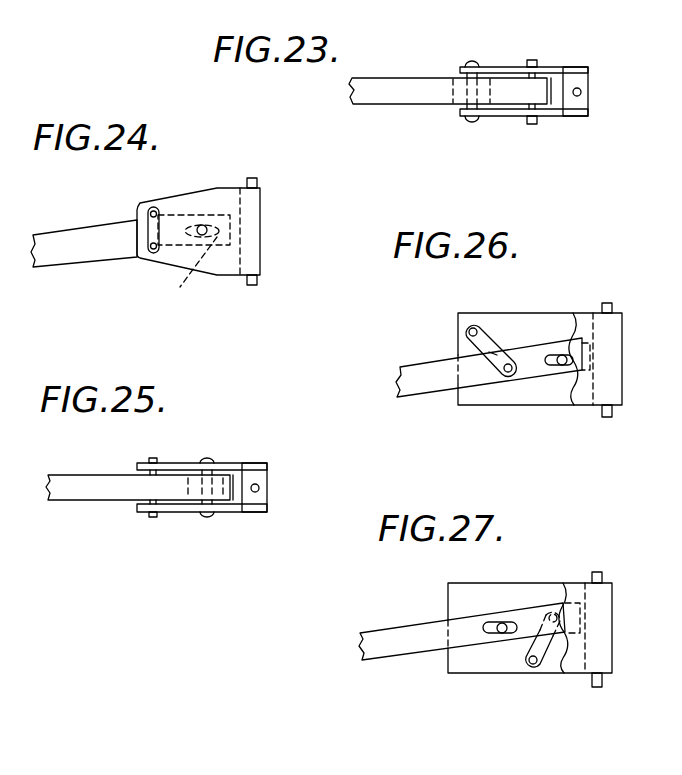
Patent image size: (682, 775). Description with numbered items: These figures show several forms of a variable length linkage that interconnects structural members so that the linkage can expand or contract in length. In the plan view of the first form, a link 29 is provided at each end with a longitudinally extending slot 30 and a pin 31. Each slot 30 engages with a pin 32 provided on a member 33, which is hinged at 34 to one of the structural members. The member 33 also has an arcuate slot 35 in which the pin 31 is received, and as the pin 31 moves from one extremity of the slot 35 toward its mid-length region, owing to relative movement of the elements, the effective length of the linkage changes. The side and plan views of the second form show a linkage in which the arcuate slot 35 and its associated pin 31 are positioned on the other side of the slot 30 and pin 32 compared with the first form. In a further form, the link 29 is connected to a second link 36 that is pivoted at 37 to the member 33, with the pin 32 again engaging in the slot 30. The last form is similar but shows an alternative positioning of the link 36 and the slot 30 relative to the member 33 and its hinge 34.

In FIG. 23, the link 29 is at (387, 63).
In FIG. 24, the link 29 is at (70, 221).
In FIG. 25, the link 29 is at (93, 464).
In FIG. 26, the link 29 is at (423, 344).
In FIG. 27, the link 29 is at (393, 619).
In FIG. 24, the longitudinally extending slot 30 is at (191, 276).
In FIG. 26, the longitudinally extending slot 30 is at (547, 366).
In FIG. 27, the longitudinally extending slot 30 is at (513, 623).
In FIG. 23, the pin 31 is at (534, 60).
In FIG. 24, the pin 31 is at (133, 243).
In FIG. 25, the pin 31 is at (153, 461).
In FIG. 23, the pin 32 is at (472, 63).
In FIG. 24, the pin 32 is at (202, 225).
In FIG. 25, the pin 32 is at (208, 462).
In FIG. 26, the pin 32 is at (558, 366).
In FIG. 27, the pin 32 is at (497, 622).
In FIG. 23, the member 33 is at (490, 67).
In FIG. 24, the member 33 is at (173, 200).
In FIG. 25, the member 33 is at (178, 453).
In FIG. 26, the member 33 is at (532, 325).
In FIG. 27, the member 33 is at (475, 673).
In FIG. 23, the hinge 34 is at (581, 91).
In FIG. 24, the hinge 34 is at (257, 182).
In FIG. 25, the hinge 34 is at (259, 487).
In FIG. 26, the hinge 34 is at (608, 303).
In FIG. 27, the hinge 34 is at (595, 577).
In FIG. 24, the arcuate slot 35 is at (137, 210).
In FIG. 26, the link 36 is at (492, 338).
In FIG. 27, the link 36 is at (550, 657).
In FIG. 26, the pivot 37 is at (475, 329).
In FIG. 27, the pivot 37 is at (528, 667).